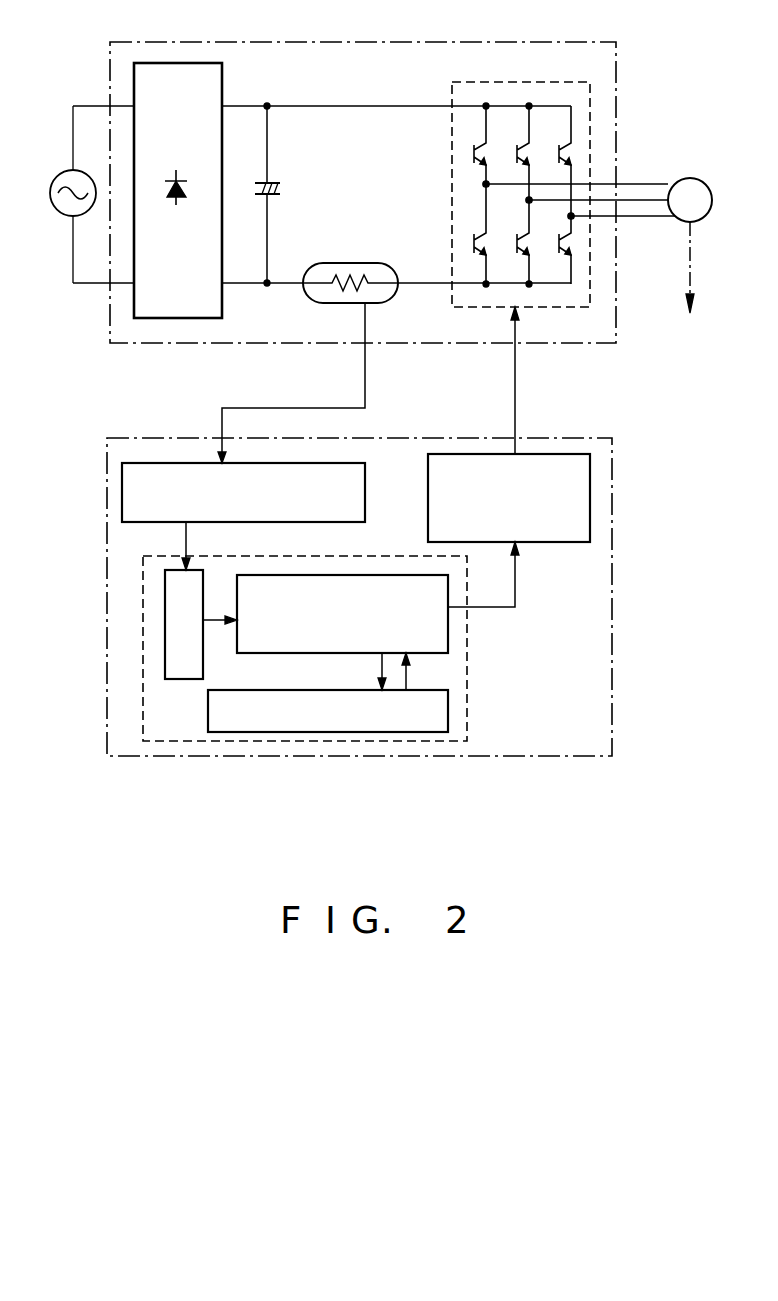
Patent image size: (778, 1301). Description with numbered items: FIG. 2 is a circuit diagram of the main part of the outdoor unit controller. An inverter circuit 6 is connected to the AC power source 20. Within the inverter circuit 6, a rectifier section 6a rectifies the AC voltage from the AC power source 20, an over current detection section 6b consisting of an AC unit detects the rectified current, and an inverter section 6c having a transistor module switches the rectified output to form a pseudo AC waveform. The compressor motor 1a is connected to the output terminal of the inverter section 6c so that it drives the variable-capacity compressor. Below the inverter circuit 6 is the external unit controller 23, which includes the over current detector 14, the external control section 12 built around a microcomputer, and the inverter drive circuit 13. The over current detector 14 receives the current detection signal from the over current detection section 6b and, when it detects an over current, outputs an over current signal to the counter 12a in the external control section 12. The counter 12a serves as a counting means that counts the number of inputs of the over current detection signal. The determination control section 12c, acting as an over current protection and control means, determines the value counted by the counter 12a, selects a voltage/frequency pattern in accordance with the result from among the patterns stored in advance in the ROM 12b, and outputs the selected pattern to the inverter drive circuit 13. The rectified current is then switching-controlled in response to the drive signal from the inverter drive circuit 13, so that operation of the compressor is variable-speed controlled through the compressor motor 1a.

The compressor motor 1a is at (688, 179).
The inverter circuit 6 is at (375, 42).
The rectifier section 6a is at (185, 63).
The over current detection section 6b is at (360, 263).
The inverter section 6c is at (480, 81).
The external control section 12 is at (467, 660).
The counter 12a is at (169, 571).
The ROM 12b is at (208, 712).
The determination control section 12c is at (448, 636).
The inverter drive circuit 13 is at (558, 458).
The over current detector 14 is at (177, 460).
The AC power source 20 is at (67, 173).
The external unit controller 23 is at (612, 645).